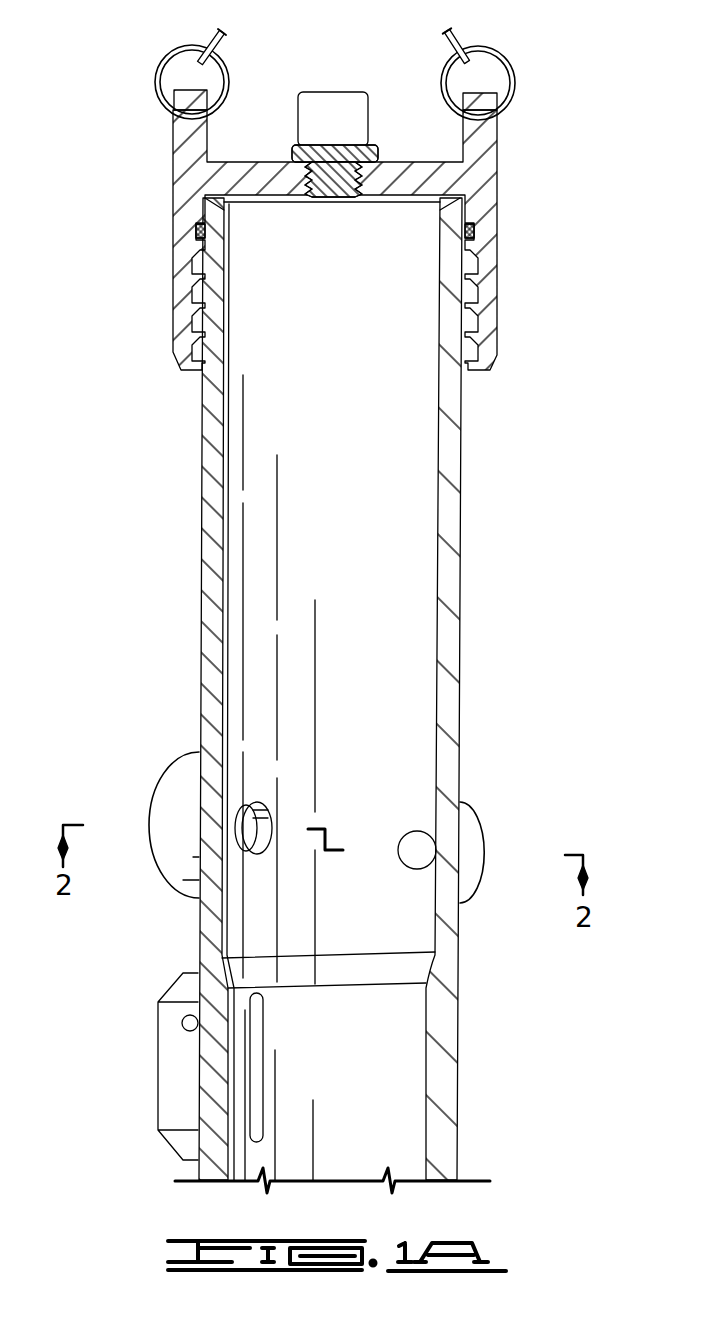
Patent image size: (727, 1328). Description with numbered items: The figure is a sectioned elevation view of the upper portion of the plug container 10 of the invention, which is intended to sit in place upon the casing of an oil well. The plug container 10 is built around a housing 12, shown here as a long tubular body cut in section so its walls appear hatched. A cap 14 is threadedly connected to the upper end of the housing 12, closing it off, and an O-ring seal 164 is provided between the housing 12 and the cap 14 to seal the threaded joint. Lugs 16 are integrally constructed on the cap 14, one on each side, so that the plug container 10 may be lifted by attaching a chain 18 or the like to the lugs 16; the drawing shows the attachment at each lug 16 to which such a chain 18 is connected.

The plug container 10 is at (369, 604).
The housing 12 is at (447, 603).
The cap 14 is at (479, 201).
The lug 16 is at (476, 99).
The chain 18 is at (466, 38).
The O-ring seal 164 is at (475, 231).